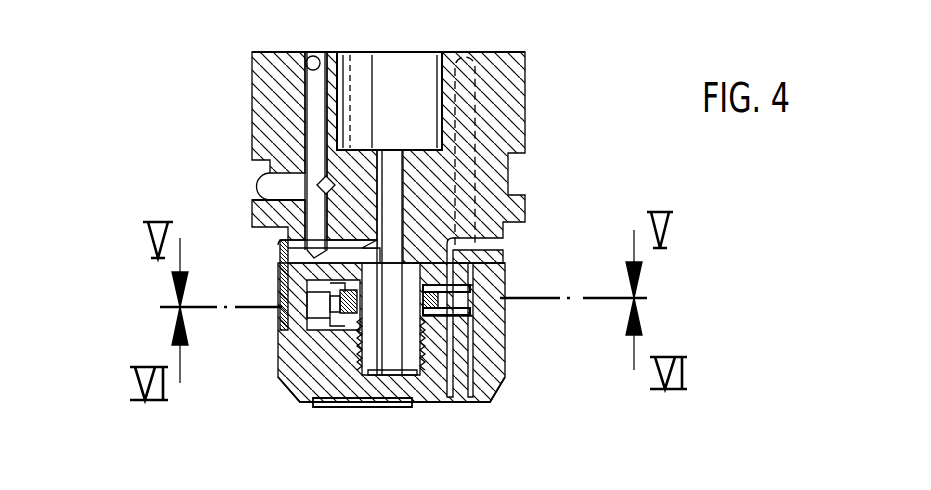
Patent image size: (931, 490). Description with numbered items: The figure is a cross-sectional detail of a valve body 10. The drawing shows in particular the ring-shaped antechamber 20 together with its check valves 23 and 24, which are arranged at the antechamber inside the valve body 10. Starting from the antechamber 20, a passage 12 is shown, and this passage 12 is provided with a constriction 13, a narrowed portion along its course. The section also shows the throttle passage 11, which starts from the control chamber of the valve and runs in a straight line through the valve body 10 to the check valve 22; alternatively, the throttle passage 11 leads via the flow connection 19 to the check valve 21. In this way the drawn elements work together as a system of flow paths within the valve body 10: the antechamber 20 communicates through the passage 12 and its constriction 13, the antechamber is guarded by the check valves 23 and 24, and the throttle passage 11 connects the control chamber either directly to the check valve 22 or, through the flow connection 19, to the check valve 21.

The valve body 10 is at (523, 265).
The throttle passage 11 is at (392, 182).
The passage 12 is at (465, 87).
The constriction 13 is at (458, 58).
The flow connection 19 is at (370, 253).
The antechamber 20 is at (310, 340).
The check valve 21 is at (280, 263).
The check valve 22 is at (368, 406).
The check valve 23 is at (465, 297).
The check valve 24 is at (470, 316).